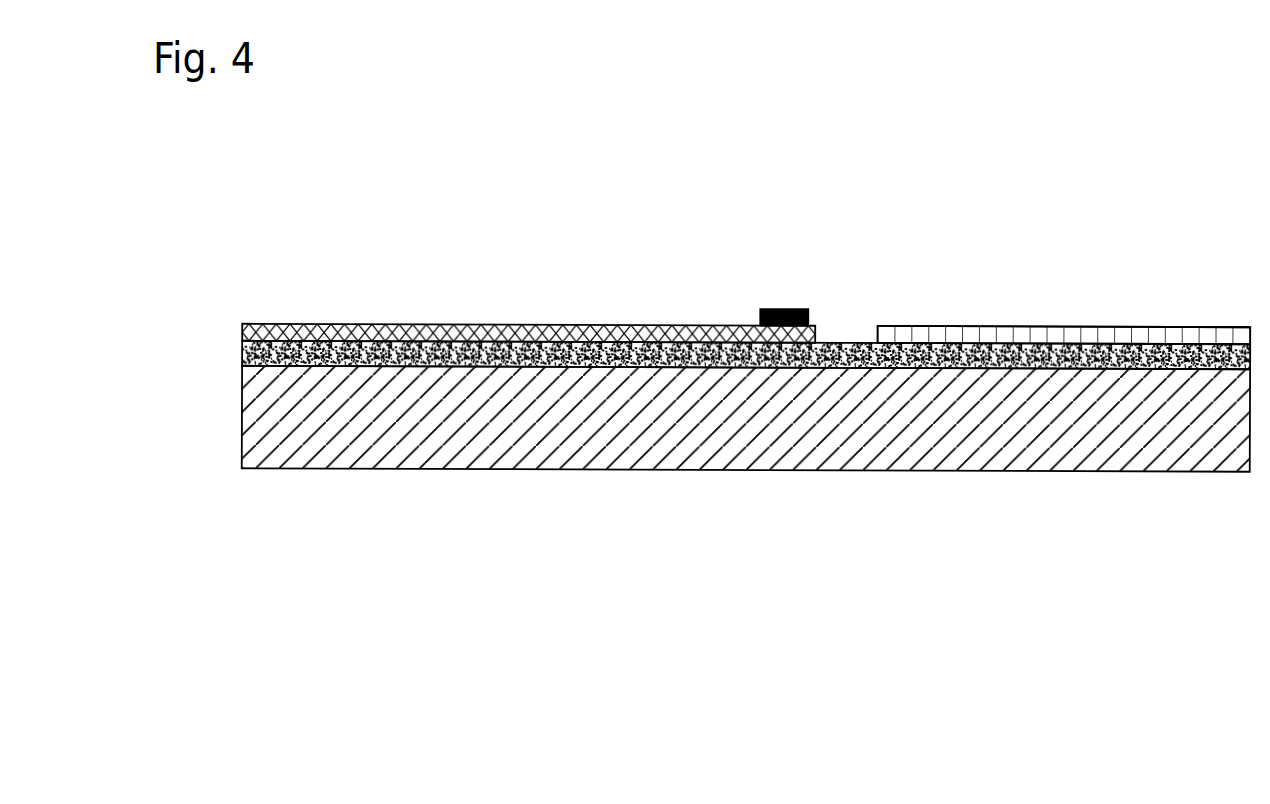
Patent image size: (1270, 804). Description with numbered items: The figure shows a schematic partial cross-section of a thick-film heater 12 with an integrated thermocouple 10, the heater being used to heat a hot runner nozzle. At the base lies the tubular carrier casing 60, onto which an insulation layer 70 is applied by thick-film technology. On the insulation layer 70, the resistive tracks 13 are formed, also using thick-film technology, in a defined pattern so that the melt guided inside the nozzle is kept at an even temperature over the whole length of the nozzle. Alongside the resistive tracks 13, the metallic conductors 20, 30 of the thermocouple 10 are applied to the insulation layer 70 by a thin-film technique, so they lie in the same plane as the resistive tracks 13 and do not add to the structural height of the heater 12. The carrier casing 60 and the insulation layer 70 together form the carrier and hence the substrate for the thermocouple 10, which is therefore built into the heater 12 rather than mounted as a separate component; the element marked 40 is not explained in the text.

The thermocouple 10 is at (701, 311).
The thick-film heater 12 is at (975, 293).
The resistive tracks 13 is at (1088, 313).
The metallic conductor 20 is at (333, 317).
The metallic conductor 30 is at (755, 300).
The top surface of contact element 40 is at (792, 300).
The carrier casing 60 is at (242, 424).
The insulation layer 70 is at (240, 351).